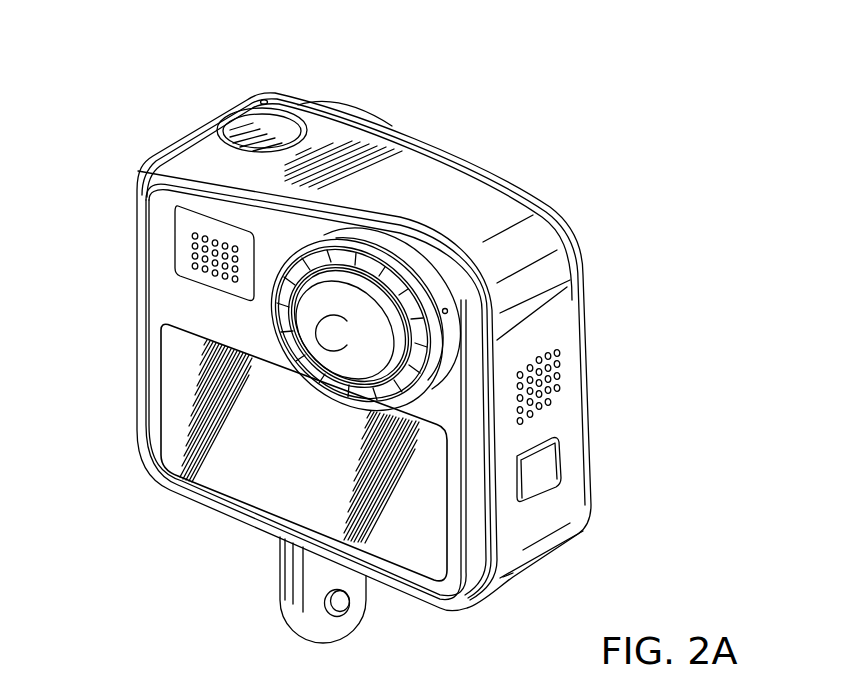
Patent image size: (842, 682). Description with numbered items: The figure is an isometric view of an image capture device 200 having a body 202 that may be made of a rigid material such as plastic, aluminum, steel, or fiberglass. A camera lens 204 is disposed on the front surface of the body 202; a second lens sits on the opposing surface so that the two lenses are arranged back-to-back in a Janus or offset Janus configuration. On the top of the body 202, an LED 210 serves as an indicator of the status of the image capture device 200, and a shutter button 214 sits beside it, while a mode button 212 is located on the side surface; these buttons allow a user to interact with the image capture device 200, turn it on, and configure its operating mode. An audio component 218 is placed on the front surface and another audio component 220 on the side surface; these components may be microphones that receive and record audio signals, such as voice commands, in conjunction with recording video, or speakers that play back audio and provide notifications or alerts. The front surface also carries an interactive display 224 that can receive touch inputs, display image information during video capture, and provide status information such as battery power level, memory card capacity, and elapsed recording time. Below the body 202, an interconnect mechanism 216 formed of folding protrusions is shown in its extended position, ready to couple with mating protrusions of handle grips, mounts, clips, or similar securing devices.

The image capture device 200 is at (638, 149).
The body 202 is at (137, 320).
The camera lens 204 is at (322, 353).
The LED 210 is at (265, 99).
The mode button 212 is at (550, 463).
The shutter button 214 is at (277, 128).
The interconnect mechanism 216 is at (313, 585).
The audio component 218 is at (190, 262).
The audio component 220 is at (560, 376).
The interactive display 224 is at (431, 553).